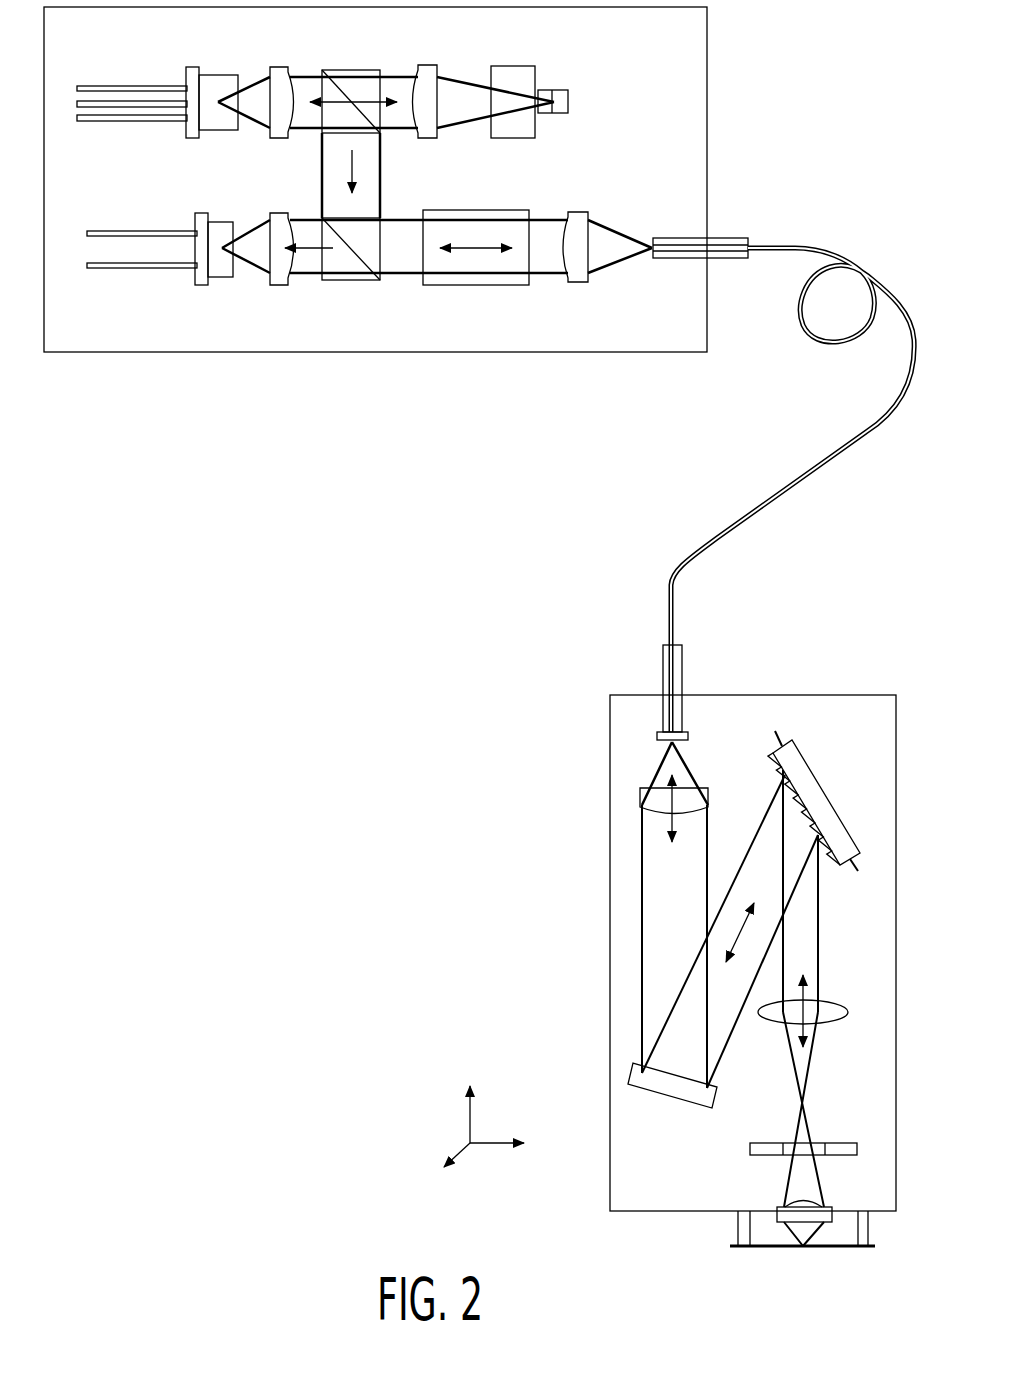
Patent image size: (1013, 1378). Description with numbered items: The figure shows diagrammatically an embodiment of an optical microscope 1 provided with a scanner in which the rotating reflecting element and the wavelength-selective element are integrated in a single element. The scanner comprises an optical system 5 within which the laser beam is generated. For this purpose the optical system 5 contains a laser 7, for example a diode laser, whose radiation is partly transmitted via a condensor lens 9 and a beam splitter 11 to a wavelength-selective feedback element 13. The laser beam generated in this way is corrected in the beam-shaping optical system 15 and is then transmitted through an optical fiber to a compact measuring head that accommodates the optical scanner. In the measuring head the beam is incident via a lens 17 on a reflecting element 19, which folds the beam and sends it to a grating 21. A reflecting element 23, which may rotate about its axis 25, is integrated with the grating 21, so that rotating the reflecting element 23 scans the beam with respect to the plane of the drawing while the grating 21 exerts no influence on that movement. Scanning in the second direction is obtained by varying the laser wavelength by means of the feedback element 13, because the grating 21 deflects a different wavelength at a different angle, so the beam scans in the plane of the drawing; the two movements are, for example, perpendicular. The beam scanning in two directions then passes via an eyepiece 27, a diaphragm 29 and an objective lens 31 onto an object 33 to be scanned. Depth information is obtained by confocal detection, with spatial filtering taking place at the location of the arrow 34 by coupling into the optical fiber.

The optical microscope 1 is at (318, 870).
The optical system 5 is at (706, 58).
The laser 7 is at (216, 77).
The condensor lens 9 is at (277, 68).
The beam splitter 11 is at (358, 85).
The wavelength-selective feedback element 13 is at (517, 70).
The beam-shaping optical system 15 is at (474, 285).
The lens 17 is at (642, 801).
The reflecting element 19 is at (687, 1100).
The grating 21 is at (772, 752).
The reflecting element 23 is at (822, 785).
The axis 25 is at (859, 872).
The eyepiece 27 is at (848, 1012).
The diaphragm 29 is at (856, 1143).
The objective lens 31 is at (833, 1207).
The object 33 is at (850, 1248).
The arrow 34 is at (654, 736).